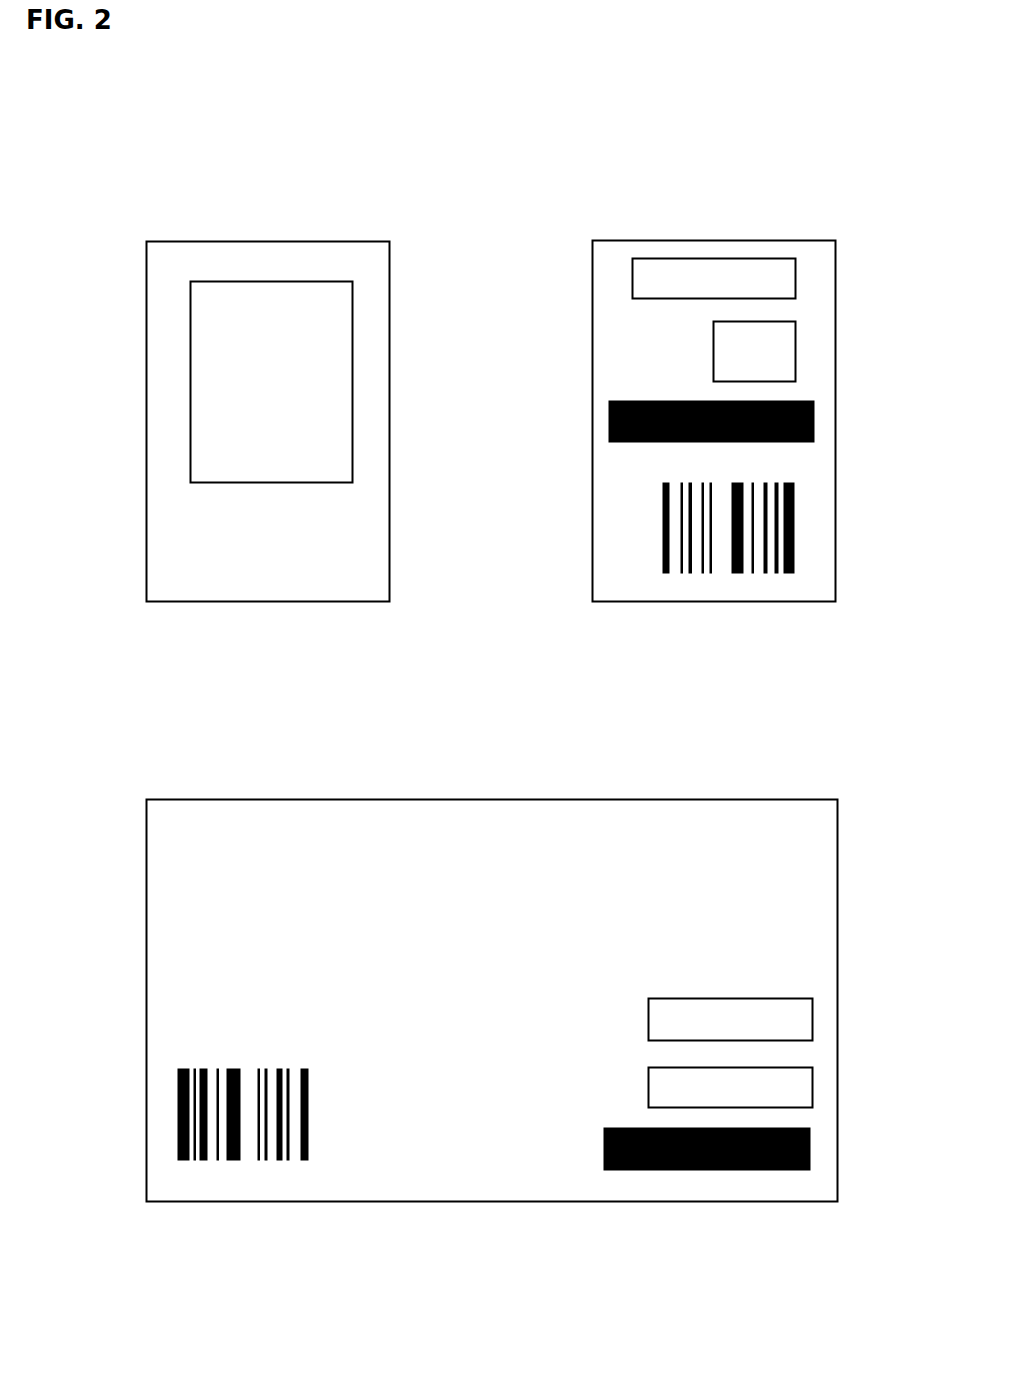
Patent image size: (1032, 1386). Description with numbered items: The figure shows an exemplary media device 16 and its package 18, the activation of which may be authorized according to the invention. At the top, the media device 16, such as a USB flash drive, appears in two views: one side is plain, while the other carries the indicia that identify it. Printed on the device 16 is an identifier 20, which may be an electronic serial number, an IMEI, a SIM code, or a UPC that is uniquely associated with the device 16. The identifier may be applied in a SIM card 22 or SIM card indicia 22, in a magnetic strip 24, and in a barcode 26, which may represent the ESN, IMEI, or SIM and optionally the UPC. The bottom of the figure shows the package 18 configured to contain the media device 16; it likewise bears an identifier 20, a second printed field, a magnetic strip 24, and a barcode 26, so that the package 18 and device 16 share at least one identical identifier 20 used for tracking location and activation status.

The media device 16 is at (138, 270).
The package 18 is at (482, 790).
The identifier 20 is at (788, 270).
The SIM card 22 is at (788, 338).
The magnetic strip 24 is at (808, 412).
The barcode 26 is at (788, 534).